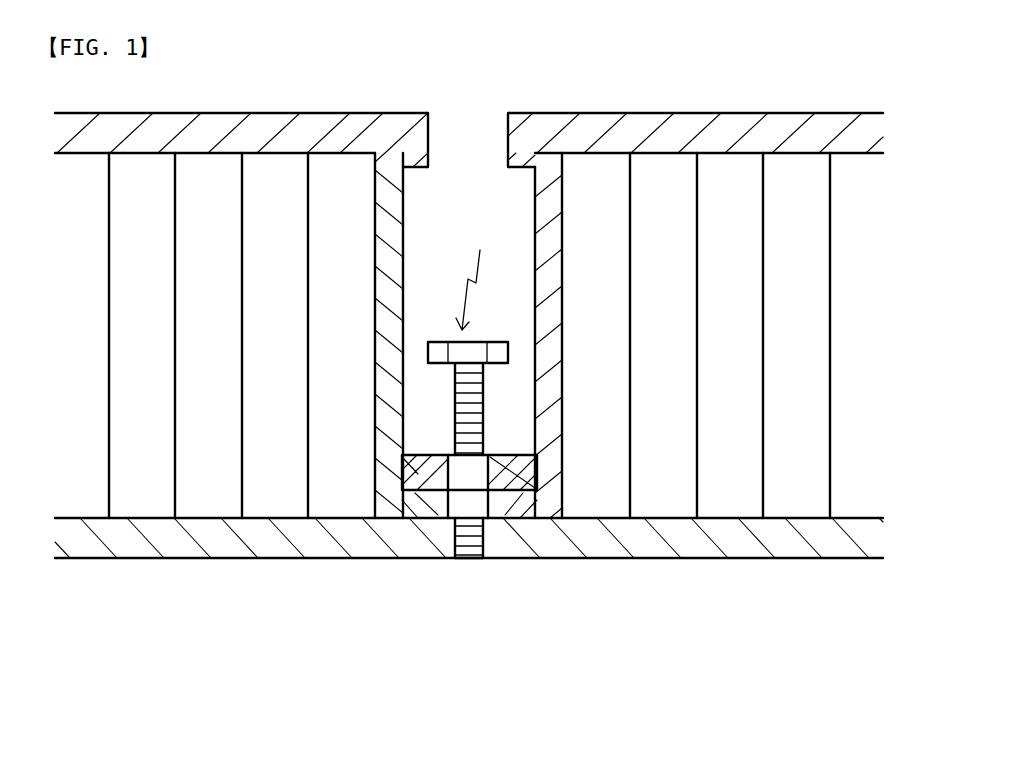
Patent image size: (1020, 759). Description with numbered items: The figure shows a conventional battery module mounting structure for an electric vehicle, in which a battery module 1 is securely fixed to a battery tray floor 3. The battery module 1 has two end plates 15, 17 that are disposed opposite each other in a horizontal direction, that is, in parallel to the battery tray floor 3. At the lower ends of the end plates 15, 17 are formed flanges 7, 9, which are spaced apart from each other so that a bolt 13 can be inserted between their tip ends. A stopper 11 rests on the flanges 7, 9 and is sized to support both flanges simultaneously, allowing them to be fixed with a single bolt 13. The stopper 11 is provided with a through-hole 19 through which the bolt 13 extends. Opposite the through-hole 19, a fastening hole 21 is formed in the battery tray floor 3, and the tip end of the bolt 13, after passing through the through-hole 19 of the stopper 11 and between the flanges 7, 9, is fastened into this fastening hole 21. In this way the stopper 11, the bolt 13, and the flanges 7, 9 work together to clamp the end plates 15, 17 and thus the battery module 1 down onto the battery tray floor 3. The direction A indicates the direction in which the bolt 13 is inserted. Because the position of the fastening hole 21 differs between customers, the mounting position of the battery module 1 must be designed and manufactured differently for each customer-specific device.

The battery module 1 is at (745, 293).
The battery tray floor 3 is at (658, 543).
The flange 7 is at (404, 512).
The flange 9 is at (505, 518).
The stopper 11 is at (425, 470).
The bolt 13 is at (505, 350).
The end plate 15 is at (378, 248).
The end plate 17 is at (550, 262).
The through-hole 19 is at (483, 476).
The fastening hole 21 is at (462, 560).
The insertion direction A is at (468, 272).